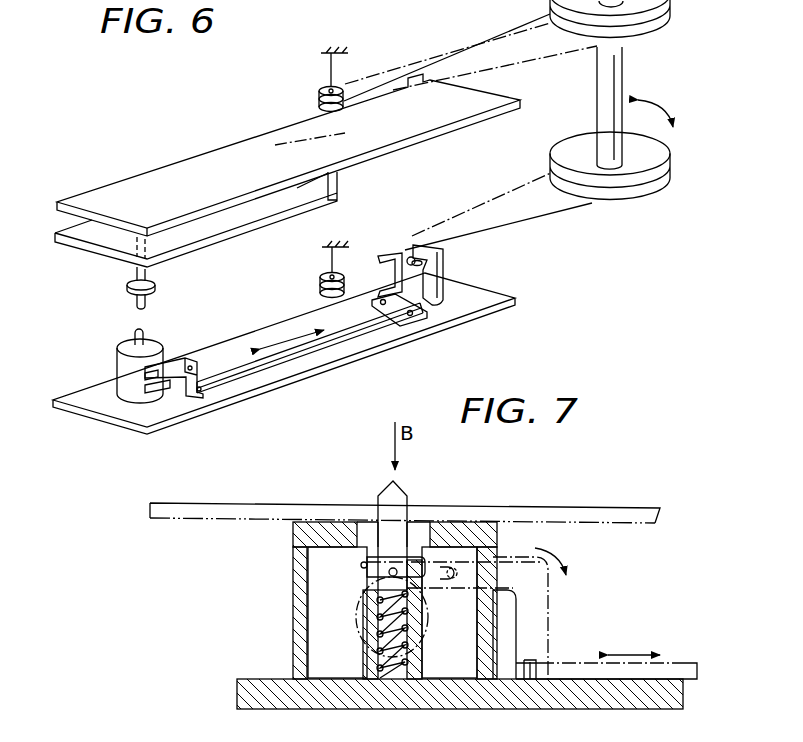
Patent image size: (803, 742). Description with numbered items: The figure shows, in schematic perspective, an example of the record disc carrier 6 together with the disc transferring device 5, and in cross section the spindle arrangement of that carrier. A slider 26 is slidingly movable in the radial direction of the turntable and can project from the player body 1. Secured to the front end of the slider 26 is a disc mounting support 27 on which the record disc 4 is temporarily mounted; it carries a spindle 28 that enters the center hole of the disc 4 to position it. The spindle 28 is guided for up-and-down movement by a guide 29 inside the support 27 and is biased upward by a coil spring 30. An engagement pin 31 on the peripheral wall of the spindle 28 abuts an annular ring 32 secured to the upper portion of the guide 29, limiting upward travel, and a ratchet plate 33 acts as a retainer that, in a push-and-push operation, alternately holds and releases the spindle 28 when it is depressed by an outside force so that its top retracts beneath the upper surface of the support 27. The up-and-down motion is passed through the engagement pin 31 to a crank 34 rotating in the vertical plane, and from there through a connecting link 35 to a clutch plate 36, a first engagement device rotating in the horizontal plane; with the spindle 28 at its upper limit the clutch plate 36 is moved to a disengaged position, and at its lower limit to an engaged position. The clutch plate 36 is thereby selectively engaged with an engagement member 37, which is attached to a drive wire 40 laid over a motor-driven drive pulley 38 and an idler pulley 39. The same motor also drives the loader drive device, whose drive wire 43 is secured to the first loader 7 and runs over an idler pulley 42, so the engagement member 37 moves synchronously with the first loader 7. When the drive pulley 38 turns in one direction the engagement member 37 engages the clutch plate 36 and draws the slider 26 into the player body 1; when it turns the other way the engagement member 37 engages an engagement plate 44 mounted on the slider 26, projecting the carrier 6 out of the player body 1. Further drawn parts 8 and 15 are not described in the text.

In FIG. 6, the player body 1 is at (345, 55).
In FIG. 7, the record disc 4 is at (608, 505).
In FIG. 6, the disc transferring device 5 is at (75, 165).
In FIG. 6, the record disc carrier 6 is at (552, 290).
In FIG. 6, the first loader 7 is at (172, 168).
In FIG. 6, the lower plate of upper frame 8 is at (97, 236).
In FIG. 6, the pivot shaft with flange 15 is at (124, 296).
In FIG. 6, the slider 26 is at (88, 393).
In FIG. 7, the slider 26 is at (253, 678).
In FIG. 6, the disc mounting support 27 is at (117, 362).
In FIG. 7, the disc mounting support 27 is at (296, 573).
In FIG. 6, the spindle 28 is at (146, 336).
In FIG. 7, the spindle 28 is at (410, 492).
In FIG. 7, the guide 29 is at (420, 628).
In FIG. 7, the coil spring 30 is at (392, 612).
In FIG. 6, the engagement pin 31 is at (157, 393).
In FIG. 7, the engagement pin 31 is at (367, 575).
In FIG. 7, the annular ring 32 is at (360, 565).
In FIG. 7, the ratchet plate 33 is at (410, 640).
In FIG. 6, the crank 34 is at (200, 362).
In FIG. 7, the crank 34 is at (550, 601).
In FIG. 6, the connecting link 35 is at (307, 353).
In FIG. 6, the clutch plate 36 is at (443, 265).
In FIG. 6, the engagement member 37 is at (402, 250).
In FIG. 6, the drive pulley 38 is at (641, 202).
In FIG. 6, the idler pulley 39 is at (318, 283).
In FIG. 6, the drive wire 40 is at (468, 216).
In FIG. 6, the idler pulley 42 is at (320, 90).
In FIG. 6, the drive wire 43 is at (445, 55).
In FIG. 6, the engagement plate 44 is at (377, 252).